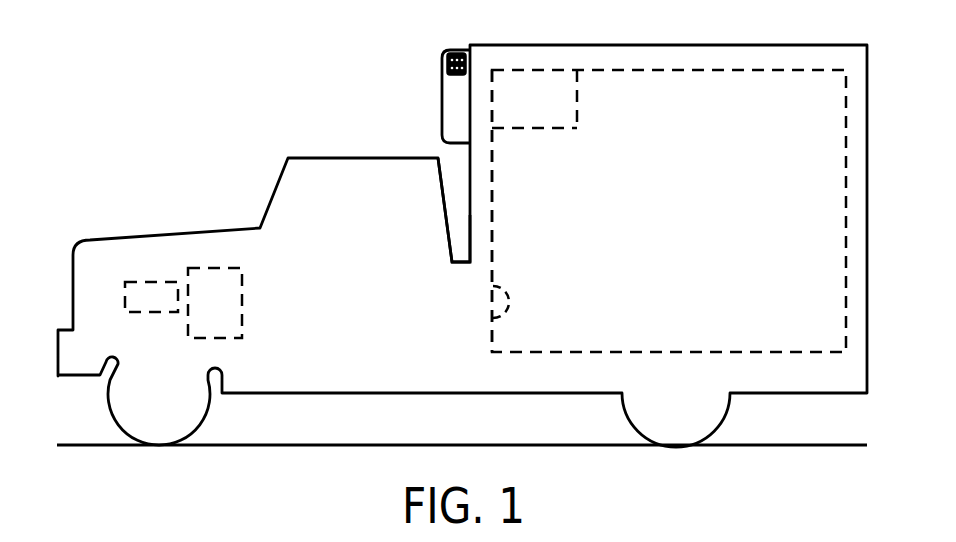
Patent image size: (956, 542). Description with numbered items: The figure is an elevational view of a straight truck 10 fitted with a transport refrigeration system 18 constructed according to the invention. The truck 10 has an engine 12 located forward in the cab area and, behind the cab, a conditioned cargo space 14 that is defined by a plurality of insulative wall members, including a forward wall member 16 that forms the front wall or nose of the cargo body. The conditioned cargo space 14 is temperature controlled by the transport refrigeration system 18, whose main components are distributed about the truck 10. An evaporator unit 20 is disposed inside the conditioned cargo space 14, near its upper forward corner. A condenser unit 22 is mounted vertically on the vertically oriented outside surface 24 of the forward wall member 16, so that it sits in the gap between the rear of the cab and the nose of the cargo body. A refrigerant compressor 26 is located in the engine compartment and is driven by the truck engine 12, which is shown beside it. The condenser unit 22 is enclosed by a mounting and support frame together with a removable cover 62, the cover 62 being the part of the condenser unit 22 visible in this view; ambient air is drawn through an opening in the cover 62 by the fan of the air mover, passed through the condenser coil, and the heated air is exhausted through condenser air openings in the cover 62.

The straight truck 10 is at (330, 158).
The engine 12 is at (233, 290).
The conditioned cargo space 14 is at (484, 318).
The forward wall member 16 is at (482, 150).
The transport refrigeration system 18 is at (528, 73).
The evaporator unit 20 is at (580, 128).
The condenser unit 22 is at (441, 110).
The vertically oriented outside surface 24 is at (470, 215).
The refrigerant compressor 26 is at (122, 302).
The removable cover 62 is at (442, 80).